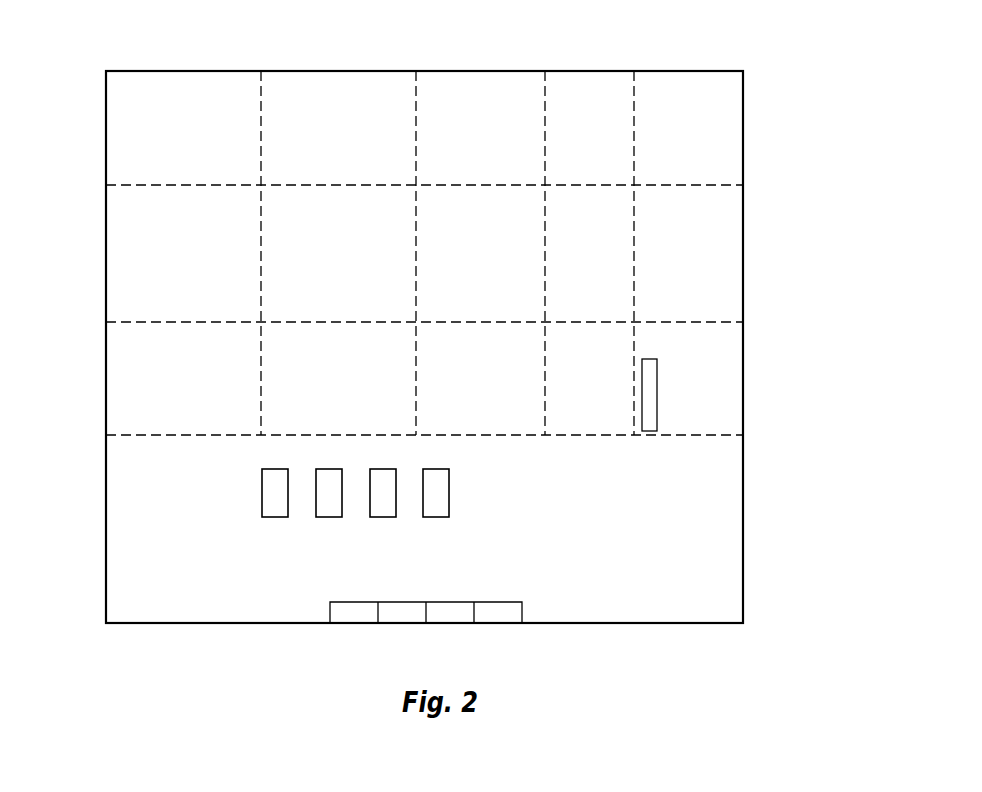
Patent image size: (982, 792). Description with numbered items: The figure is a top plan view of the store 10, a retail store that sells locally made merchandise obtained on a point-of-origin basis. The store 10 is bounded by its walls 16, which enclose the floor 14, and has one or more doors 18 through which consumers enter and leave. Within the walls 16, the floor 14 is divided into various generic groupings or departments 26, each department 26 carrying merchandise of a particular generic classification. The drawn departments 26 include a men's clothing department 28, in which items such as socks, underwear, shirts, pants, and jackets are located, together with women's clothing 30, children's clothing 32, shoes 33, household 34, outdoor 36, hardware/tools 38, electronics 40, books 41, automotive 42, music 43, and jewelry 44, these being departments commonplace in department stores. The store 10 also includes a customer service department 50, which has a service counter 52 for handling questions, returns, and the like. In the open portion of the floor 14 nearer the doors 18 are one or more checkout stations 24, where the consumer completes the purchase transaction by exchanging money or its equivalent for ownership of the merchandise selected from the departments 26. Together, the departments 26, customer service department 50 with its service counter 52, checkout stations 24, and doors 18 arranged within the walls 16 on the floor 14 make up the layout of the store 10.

The store 10 is at (794, 92).
The floor 14 is at (441, 561).
The walls 16 is at (580, 71).
The doors 18 is at (507, 615).
The checkout stations 24 is at (323, 517).
The departments 26 is at (222, 90).
The men's clothing department 28 is at (331, 156).
The women's clothing department 30 is at (331, 266).
The children's clothing department 32 is at (331, 397).
The shoes department 33 is at (471, 267).
The household department 34 is at (581, 267).
The outdoor department 36 is at (173, 149).
The hardware/tools department 38 is at (173, 261).
The electronics department 40 is at (173, 392).
The books department 41 is at (471, 147).
The automotive department 42 is at (677, 147).
The music department 43 is at (581, 147).
The jewelry department 44 is at (471, 400).
The customer service department 50 is at (681, 397).
The service counter 52 is at (648, 431).